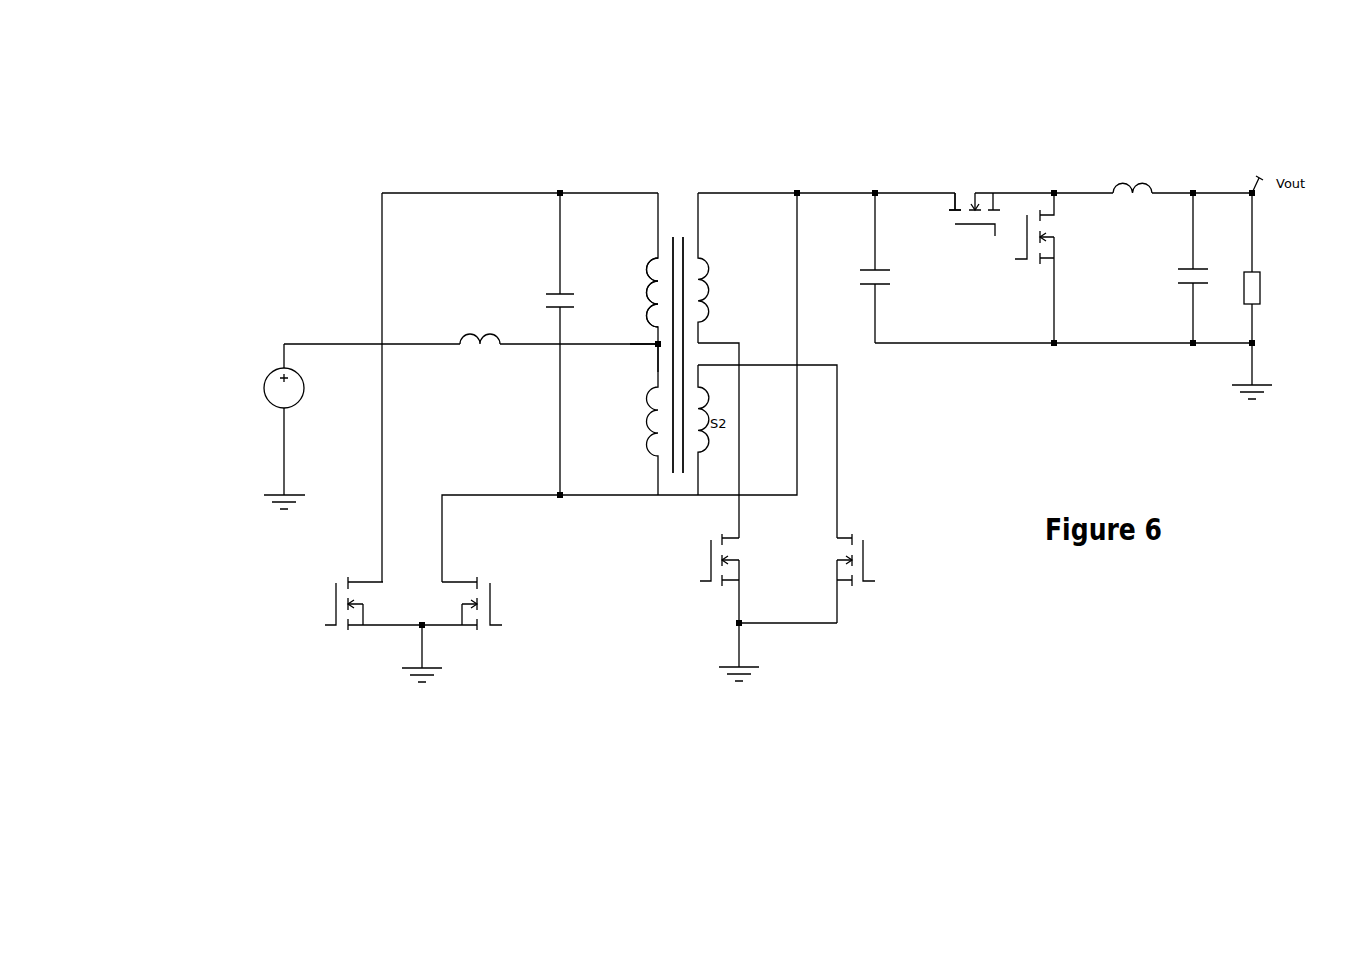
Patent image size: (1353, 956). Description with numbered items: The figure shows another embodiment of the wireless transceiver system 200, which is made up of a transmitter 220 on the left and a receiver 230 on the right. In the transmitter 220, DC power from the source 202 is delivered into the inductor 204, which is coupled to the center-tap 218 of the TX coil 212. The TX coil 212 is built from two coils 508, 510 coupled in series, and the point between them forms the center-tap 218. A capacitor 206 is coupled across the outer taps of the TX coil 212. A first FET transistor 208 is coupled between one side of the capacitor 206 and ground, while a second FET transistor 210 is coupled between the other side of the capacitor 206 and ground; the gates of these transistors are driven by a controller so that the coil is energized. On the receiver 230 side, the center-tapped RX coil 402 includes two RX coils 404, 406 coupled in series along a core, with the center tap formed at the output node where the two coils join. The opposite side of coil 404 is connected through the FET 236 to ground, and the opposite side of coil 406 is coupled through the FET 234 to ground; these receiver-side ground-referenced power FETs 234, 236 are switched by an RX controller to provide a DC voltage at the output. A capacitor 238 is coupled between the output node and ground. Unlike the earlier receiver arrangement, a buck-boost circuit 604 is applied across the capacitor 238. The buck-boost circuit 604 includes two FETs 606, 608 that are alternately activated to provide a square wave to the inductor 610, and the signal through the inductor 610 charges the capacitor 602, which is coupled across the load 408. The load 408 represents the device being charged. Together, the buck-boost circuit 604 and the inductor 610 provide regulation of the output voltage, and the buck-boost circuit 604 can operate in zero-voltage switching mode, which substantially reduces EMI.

The transceiver system 200 is at (125, 111).
The transmitter 220 is at (345, 197).
The source 202 is at (266, 383).
The inductor 204 is at (490, 360).
The capacitor 206 is at (498, 270).
The TX coil 212 is at (653, 258).
The coil 508 is at (650, 296).
The center-tap 218 is at (653, 350).
The coil 510 is at (647, 430).
The coil 402 is at (695, 228).
The coil 404 is at (695, 453).
The coil 406 is at (700, 275).
The first FET transistor 208 is at (326, 597).
The second FET transistor 210 is at (497, 600).
The FET 234 is at (690, 560).
The FET 236 is at (863, 555).
The capacitor 238 is at (866, 282).
The buck-boost circuit 604 is at (990, 245).
The FET 606 is at (960, 193).
The FET 608 is at (1057, 241).
The inductor 610 is at (1128, 172).
The capacitor 602 is at (1173, 277).
The load 408 is at (1268, 307).
The receiver 230 is at (1095, 432).